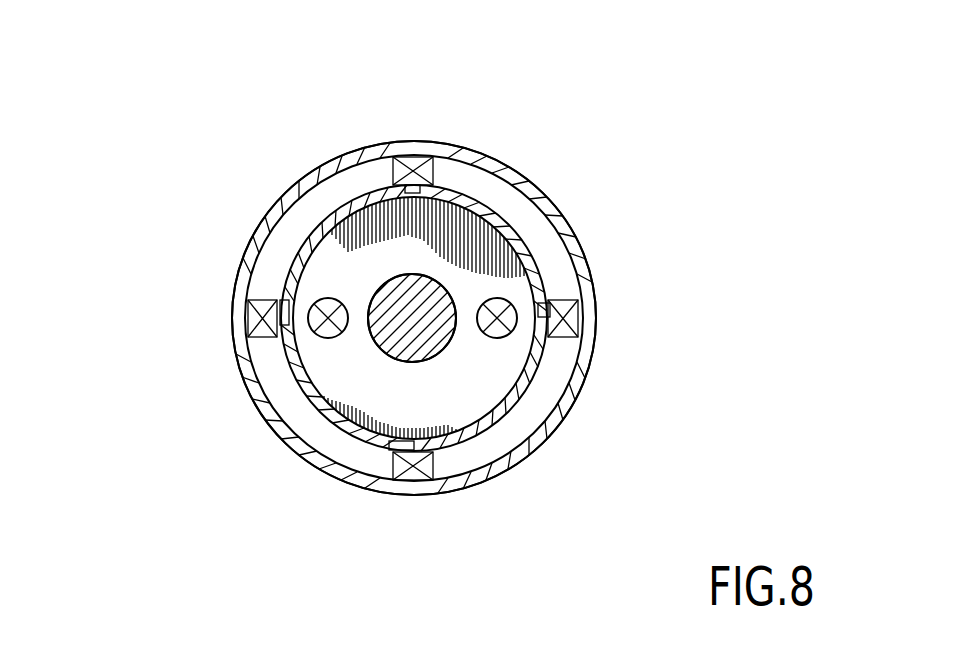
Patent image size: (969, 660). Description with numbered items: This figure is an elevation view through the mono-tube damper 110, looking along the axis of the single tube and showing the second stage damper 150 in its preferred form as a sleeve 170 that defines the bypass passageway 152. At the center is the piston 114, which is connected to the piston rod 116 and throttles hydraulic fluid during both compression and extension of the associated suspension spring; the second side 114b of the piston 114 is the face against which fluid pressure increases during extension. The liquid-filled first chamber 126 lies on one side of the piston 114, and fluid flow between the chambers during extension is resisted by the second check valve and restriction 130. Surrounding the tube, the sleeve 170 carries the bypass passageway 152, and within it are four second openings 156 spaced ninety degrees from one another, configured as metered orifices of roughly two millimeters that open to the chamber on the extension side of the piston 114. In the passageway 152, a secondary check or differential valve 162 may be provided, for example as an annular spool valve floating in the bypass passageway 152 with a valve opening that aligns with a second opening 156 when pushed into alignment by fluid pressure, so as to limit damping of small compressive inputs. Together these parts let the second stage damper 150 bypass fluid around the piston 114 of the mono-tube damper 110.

The mono-tube damper 110 is at (474, 140).
The piston 114 is at (465, 402).
The second side of the piston 114b is at (487, 396).
The piston rod 116 is at (386, 346).
The first chamber 126 is at (328, 338).
The second check valve and restriction 130 is at (500, 330).
The second stage damper 150 is at (578, 208).
The bypass passageway 152 is at (512, 208).
The second opening 156 is at (398, 190).
The secondary check or differential valve 162 is at (413, 168).
The sleeve 170 is at (293, 192).